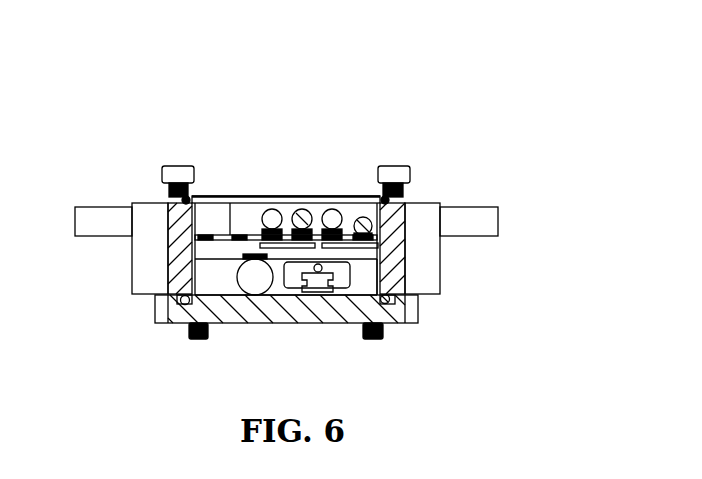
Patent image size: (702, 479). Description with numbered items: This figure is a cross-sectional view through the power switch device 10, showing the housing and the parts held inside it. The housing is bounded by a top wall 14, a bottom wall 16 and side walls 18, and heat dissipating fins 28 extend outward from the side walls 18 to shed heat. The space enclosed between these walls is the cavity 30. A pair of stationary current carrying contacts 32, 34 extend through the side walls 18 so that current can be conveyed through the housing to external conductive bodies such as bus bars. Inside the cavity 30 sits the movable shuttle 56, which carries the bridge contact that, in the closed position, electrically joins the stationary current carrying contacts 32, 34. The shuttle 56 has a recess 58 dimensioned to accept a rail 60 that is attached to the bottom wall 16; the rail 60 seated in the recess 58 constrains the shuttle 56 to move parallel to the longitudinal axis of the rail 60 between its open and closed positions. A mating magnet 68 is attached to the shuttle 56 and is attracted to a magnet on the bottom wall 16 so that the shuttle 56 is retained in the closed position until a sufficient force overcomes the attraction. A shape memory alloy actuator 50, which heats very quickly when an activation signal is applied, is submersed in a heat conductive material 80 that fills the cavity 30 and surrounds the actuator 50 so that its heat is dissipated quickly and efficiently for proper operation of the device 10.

The power switch device 10 is at (462, 110).
The top wall 14 is at (317, 196).
The bottom wall 16 is at (342, 318).
The side walls 18 is at (172, 265).
The heat dissipating fins 28 is at (148, 212).
The cavity 30 is at (208, 277).
The stationary current carrying contact 32 is at (92, 234).
The stationary current carrying contact 34 is at (472, 207).
The shape memory alloy actuator 50 is at (298, 210).
The shuttle 56 is at (230, 247).
The recess 58 is at (287, 281).
The rail 60 is at (318, 288).
The mating magnet 68 is at (252, 282).
The heat conductive material 80 is at (367, 277).